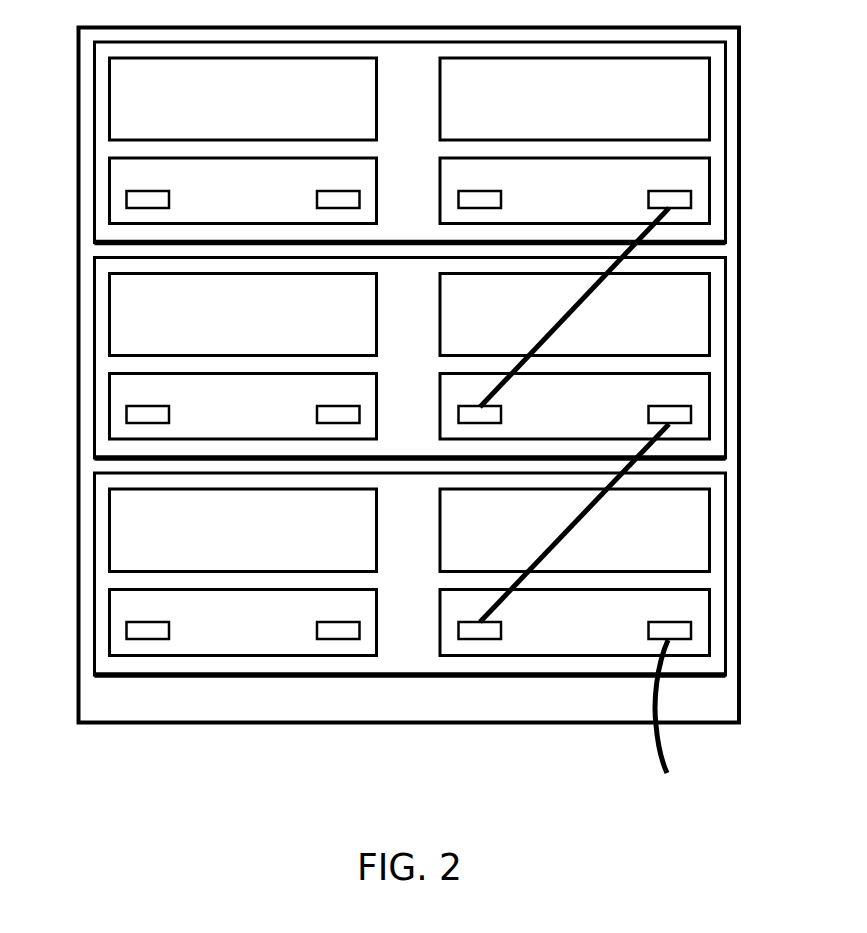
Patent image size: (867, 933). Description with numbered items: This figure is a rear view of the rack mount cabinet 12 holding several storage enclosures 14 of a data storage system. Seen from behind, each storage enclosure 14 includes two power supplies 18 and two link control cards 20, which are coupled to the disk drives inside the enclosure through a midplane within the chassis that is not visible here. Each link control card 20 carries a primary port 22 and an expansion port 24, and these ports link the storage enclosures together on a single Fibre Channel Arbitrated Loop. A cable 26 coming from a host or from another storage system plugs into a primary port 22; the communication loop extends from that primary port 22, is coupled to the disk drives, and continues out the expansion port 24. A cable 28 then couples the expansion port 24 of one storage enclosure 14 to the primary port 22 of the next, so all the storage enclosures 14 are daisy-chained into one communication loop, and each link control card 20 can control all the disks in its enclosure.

The rack mount cabinet 12 is at (77, 197).
The storage enclosure 14 is at (93, 412).
The power supply 18 is at (108, 526).
The link control card 20 is at (108, 621).
The primary port 22 is at (318, 637).
The expansion port 24 is at (170, 637).
The cable 26 is at (663, 749).
The cable 28 is at (571, 526).